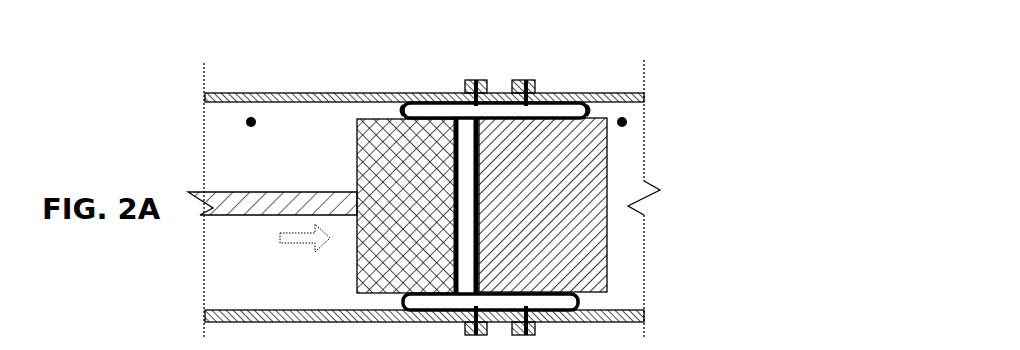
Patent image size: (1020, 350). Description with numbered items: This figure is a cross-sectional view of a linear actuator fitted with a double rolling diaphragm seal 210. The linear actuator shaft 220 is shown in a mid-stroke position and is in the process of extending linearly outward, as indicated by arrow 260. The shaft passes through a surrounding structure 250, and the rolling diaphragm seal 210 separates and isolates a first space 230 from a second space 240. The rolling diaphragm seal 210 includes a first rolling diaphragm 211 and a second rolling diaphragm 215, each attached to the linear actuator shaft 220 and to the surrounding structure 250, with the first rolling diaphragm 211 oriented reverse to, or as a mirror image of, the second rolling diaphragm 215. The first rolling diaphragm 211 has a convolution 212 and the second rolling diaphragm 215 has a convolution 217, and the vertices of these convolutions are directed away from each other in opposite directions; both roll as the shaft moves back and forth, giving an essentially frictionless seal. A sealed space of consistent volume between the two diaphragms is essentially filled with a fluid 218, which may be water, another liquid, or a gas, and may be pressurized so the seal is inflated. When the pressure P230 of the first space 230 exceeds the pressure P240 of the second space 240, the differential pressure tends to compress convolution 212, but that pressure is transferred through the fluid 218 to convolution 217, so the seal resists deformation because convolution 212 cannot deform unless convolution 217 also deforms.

The rolling diaphragm seal 210 is at (500, 80).
The first rolling diaphragm 211 is at (432, 97).
The convolution 212 is at (387, 115).
The second rolling diaphragm 215 is at (546, 96).
The convolution 217 is at (587, 108).
The fluid 218 is at (497, 110).
The linear actuator shaft 220 is at (326, 169).
The first space 230 is at (272, 185).
The second space 240 is at (632, 232).
The surrounding structure 250 is at (327, 93).
The arrow 260 is at (300, 240).
The pressure of the first space P230 is at (248, 117).
The pressure of the second space P240 is at (627, 124).